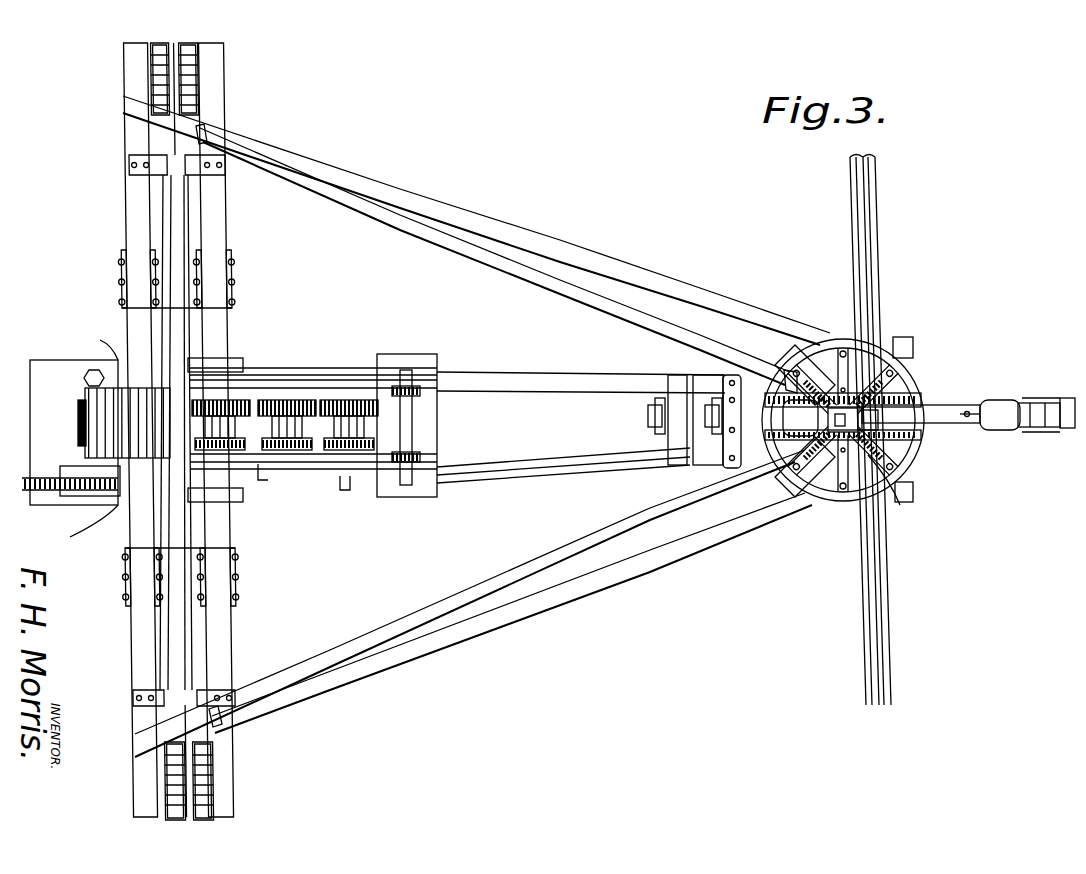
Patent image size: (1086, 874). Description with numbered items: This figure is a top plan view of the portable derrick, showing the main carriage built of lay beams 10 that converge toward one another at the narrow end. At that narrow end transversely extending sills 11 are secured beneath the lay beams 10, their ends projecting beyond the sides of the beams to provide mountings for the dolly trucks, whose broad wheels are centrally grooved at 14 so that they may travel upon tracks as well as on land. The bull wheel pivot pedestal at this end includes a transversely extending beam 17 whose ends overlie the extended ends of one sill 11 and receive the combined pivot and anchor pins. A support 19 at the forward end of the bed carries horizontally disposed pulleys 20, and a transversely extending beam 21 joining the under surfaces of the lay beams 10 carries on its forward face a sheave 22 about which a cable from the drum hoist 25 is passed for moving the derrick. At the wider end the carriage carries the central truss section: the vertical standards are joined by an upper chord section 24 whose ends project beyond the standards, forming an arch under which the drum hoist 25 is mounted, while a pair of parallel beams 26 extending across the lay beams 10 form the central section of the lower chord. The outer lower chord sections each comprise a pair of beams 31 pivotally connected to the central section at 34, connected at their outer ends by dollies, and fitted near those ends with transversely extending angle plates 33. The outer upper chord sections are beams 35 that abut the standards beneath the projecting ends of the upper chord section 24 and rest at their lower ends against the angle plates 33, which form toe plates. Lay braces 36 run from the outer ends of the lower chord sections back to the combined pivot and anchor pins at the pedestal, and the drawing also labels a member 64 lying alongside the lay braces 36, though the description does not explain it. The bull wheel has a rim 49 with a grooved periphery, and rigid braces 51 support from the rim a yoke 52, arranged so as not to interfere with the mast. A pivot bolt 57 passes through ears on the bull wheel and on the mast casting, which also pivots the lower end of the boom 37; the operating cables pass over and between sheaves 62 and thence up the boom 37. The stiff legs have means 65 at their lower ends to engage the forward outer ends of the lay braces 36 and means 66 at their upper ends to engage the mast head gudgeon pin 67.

The lay beams 10 is at (118, 365).
The sills 11 is at (838, 358).
The grooves 14 is at (205, 57).
The transversely extending beam 17 is at (913, 498).
The support 19 is at (745, 421).
The pulleys 20 is at (683, 372).
The transversely extending beam 21 is at (680, 452).
The sheave 22 is at (648, 416).
The upper chord section 24 is at (172, 412).
The drum hoist 25 is at (315, 378).
The parallel beams 26 is at (218, 328).
The beams 31 is at (125, 66).
The angle plates 33 is at (128, 145).
The pivotal connection 34 is at (150, 240).
The beam 35 is at (176, 237).
The lay braces 36 is at (553, 248).
The boom 37 is at (945, 418).
The rim 49 is at (790, 360).
The rigid braces 51 is at (885, 435).
The yoke 52 is at (895, 500).
The pivot bolt 57 is at (765, 468).
The sheaves 62 is at (228, 730).
The strut 64 is at (495, 268).
The engaging means 65 is at (212, 120).
The engaging means 66 is at (790, 380).
The mast head gudgeon pin 67 is at (898, 365).